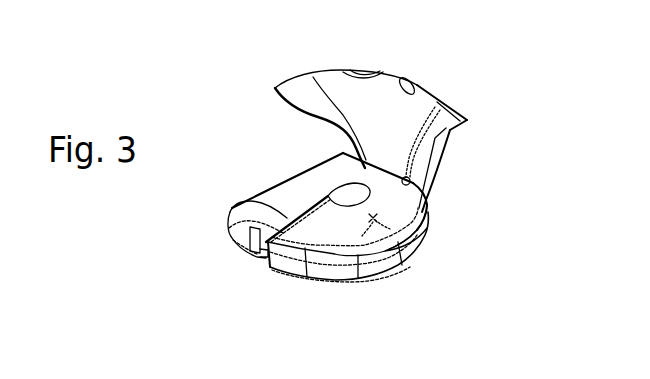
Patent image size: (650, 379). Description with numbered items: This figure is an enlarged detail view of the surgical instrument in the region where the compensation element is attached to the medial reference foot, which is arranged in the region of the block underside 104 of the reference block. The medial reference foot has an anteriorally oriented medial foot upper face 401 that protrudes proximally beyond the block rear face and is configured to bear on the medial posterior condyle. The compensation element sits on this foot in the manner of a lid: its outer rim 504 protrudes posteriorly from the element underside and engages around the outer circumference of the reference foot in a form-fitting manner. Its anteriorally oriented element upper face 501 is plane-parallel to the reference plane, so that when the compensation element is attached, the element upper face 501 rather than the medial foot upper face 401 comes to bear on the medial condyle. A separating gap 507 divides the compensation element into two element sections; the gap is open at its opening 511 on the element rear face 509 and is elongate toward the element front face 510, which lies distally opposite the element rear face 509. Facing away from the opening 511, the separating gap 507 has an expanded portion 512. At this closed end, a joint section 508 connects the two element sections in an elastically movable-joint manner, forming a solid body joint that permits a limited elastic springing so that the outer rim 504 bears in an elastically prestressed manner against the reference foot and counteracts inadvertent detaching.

The element front face 510 is at (313, 77).
The expanded portion 512 is at (353, 197).
The element upper face 501 is at (307, 188).
The separating gap 507 is at (237, 207).
The opening 511 is at (235, 255).
The element rear face 509 is at (297, 265).
The outer rim 504 is at (350, 280).
The block underside 104 is at (443, 138).
The joint section 508 is at (428, 208).
The medial foot upper face 401 is at (412, 236).